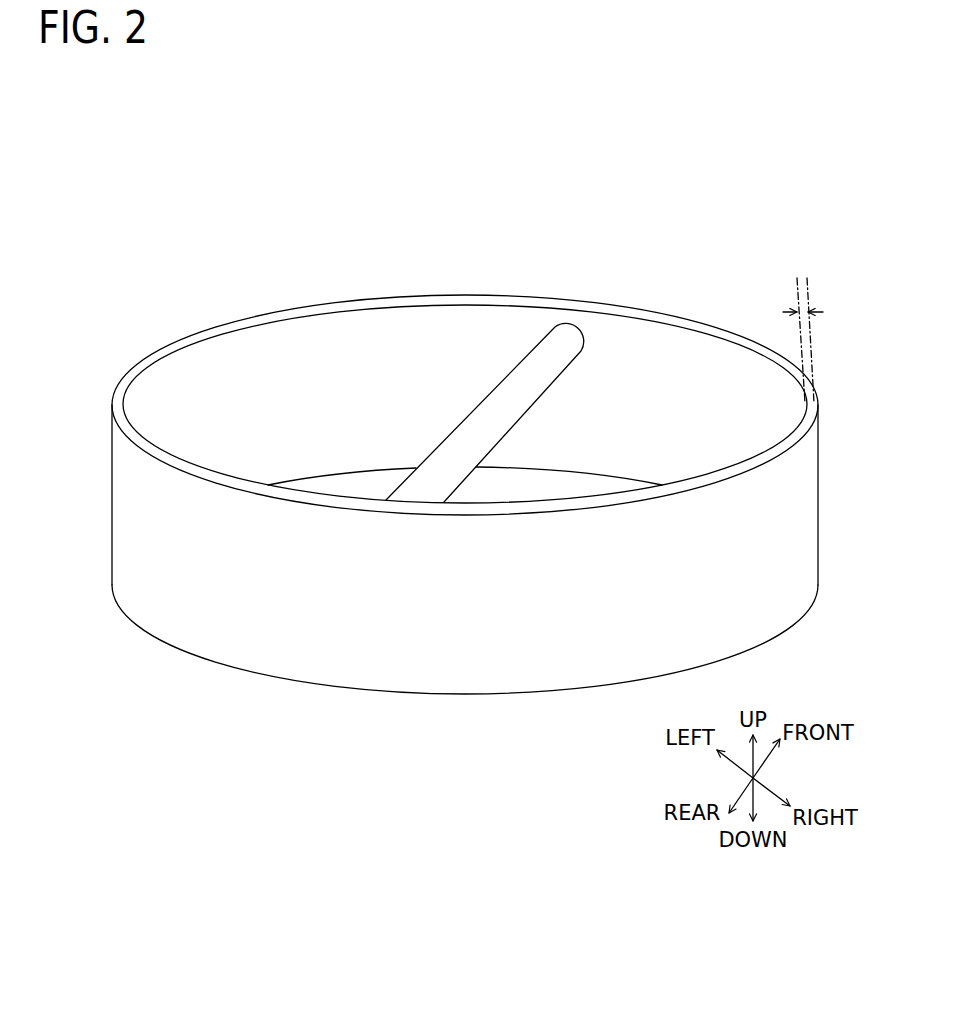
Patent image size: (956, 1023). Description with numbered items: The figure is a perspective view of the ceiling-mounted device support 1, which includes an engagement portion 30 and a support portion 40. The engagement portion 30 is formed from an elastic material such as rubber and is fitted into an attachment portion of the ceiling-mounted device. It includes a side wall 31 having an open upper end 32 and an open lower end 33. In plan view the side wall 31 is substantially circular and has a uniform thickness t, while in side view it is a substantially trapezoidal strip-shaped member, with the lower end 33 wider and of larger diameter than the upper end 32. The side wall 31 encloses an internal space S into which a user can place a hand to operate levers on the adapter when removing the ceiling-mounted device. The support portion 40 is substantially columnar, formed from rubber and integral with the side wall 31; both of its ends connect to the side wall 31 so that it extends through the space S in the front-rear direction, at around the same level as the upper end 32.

The ceiling-mounted device support 1 is at (725, 138).
The engagement portion 30 is at (408, 180).
The side wall 31 is at (262, 381).
The open upper end 32 is at (355, 308).
The open lower end 33 is at (394, 469).
The internal space S is at (210, 370).
The support portion 40 is at (552, 358).
The thickness t is at (803, 340).